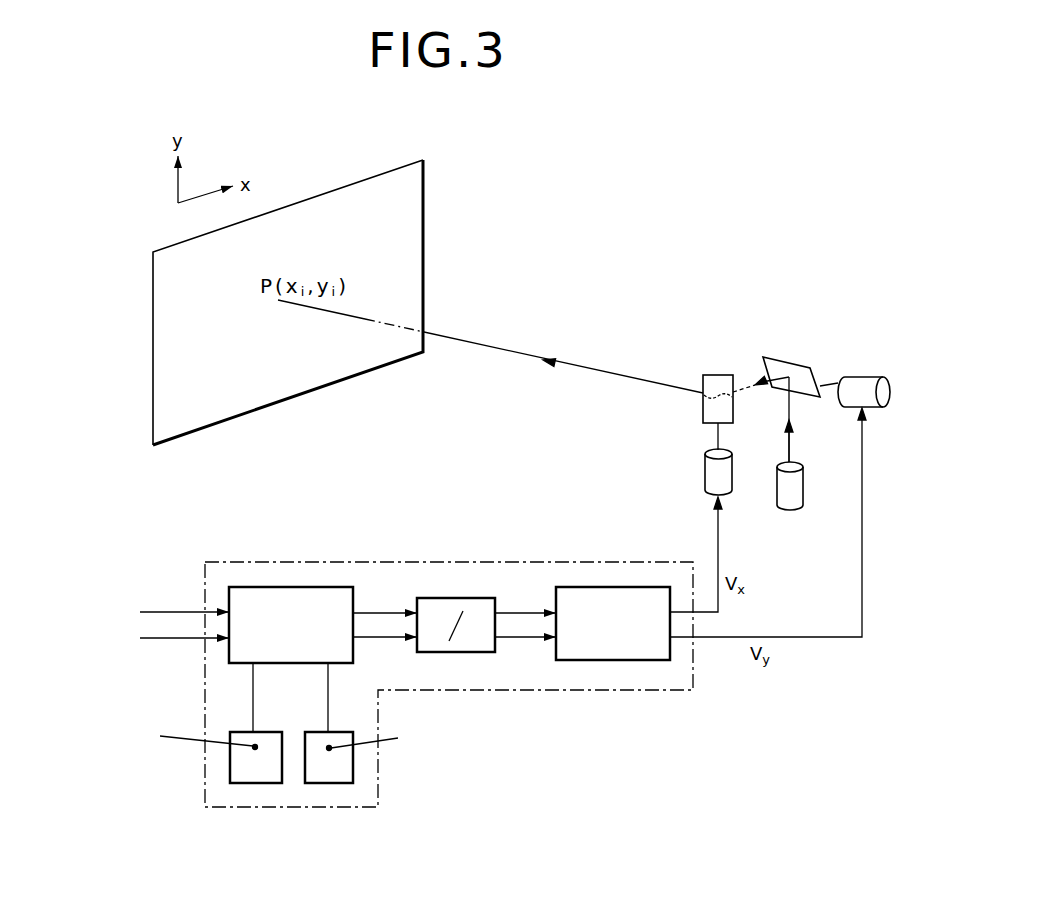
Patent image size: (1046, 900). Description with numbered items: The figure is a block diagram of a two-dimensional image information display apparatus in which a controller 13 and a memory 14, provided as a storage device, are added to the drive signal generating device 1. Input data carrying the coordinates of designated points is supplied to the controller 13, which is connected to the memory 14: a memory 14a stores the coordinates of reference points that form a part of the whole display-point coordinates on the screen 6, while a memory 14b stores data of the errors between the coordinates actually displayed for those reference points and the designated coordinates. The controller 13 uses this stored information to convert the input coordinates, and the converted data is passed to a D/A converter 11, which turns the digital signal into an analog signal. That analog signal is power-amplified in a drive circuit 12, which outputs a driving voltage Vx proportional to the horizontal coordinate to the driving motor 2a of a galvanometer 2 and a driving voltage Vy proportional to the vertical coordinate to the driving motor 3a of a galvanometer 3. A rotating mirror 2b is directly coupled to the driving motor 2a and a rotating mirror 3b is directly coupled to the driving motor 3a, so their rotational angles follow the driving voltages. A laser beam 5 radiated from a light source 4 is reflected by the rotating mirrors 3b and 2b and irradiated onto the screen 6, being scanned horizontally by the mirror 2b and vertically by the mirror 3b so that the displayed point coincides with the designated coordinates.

The drive signal generating device 1 is at (385, 562).
The galvanometer 2 is at (573, 469).
The driving motor 2a is at (705, 473).
The rotating mirror 2b is at (703, 405).
The galvanometer 3 is at (852, 301).
The driving motor 3a is at (855, 377).
The rotating mirror 3b is at (780, 358).
The light source 4 is at (790, 512).
The laser beam 5 is at (792, 450).
The screen 6 is at (425, 243).
The D/A converter 11 is at (455, 652).
The drive circuit 12 is at (556, 655).
The controller 13 is at (291, 587).
The memory 14 is at (306, 714).
The memory 14a is at (230, 770).
The memory 14b is at (355, 765).